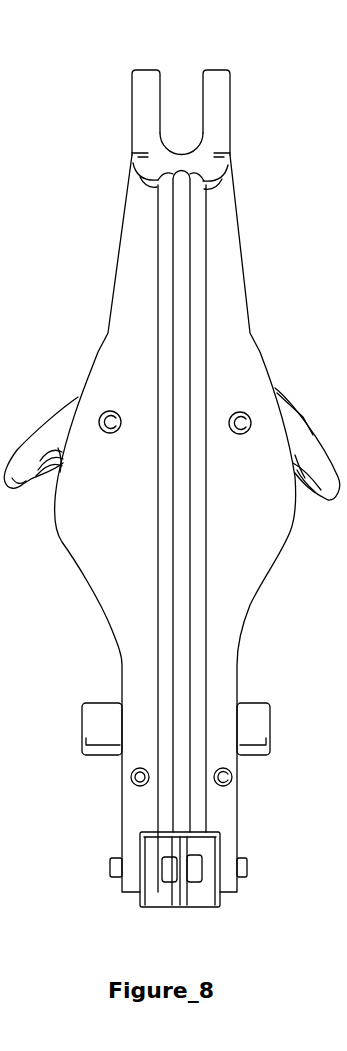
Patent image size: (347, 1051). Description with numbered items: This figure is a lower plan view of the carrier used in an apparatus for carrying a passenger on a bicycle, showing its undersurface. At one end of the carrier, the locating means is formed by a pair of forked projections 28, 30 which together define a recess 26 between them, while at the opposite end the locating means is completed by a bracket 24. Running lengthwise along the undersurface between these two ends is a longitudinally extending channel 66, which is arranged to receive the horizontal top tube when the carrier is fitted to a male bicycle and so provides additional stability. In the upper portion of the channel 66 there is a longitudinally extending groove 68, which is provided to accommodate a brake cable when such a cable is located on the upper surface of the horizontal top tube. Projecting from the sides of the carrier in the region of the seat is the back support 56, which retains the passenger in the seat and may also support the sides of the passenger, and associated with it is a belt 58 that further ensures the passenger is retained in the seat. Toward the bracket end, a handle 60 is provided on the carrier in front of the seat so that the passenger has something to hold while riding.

The bracket 24 is at (150, 893).
The recess 26 is at (183, 115).
The forked projection 28 is at (143, 97).
The forked projection 30 is at (222, 98).
The back support 56 is at (53, 423).
The belt 58 is at (47, 480).
The handle 60 is at (242, 712).
The channel 66 is at (195, 273).
The groove 68 is at (178, 350).